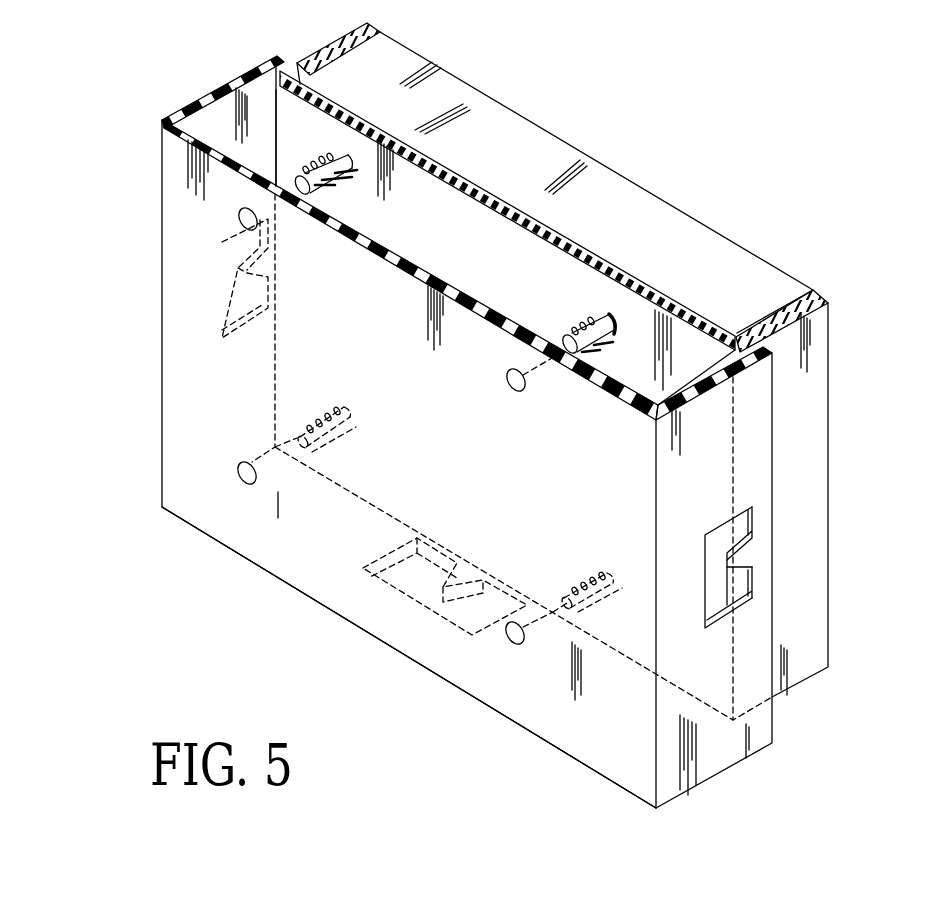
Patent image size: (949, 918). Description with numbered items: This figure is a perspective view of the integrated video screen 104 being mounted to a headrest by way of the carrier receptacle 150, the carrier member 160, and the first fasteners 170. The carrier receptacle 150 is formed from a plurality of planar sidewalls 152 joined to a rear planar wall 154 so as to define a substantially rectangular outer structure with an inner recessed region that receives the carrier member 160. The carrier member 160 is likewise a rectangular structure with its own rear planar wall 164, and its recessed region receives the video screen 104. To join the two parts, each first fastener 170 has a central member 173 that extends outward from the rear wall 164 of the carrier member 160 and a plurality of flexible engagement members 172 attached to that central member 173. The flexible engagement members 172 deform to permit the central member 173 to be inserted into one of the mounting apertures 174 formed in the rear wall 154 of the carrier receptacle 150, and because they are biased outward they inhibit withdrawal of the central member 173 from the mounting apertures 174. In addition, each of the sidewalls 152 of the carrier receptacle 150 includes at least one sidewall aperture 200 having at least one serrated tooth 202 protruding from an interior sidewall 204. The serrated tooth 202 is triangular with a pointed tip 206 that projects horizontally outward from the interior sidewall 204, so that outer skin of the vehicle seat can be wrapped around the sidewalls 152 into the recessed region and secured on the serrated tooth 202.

The integrated video screen 104 is at (557, 151).
The carrier receptacle 150 is at (190, 387).
The planar sidewall 152 is at (717, 753).
The rear planar wall 154 is at (532, 695).
The carrier member 160 is at (455, 168).
The rear planar wall 164 is at (697, 357).
The first fastener 170 is at (613, 318).
The flexible engagement member 172 is at (345, 182).
The central member 173 is at (580, 330).
The mounting aperture 174 is at (523, 400).
The sidewall aperture 200 is at (750, 585).
The serrated tooth 202 is at (748, 561).
The interior sidewall 204 is at (753, 522).
The pointed tip 206 is at (705, 565).